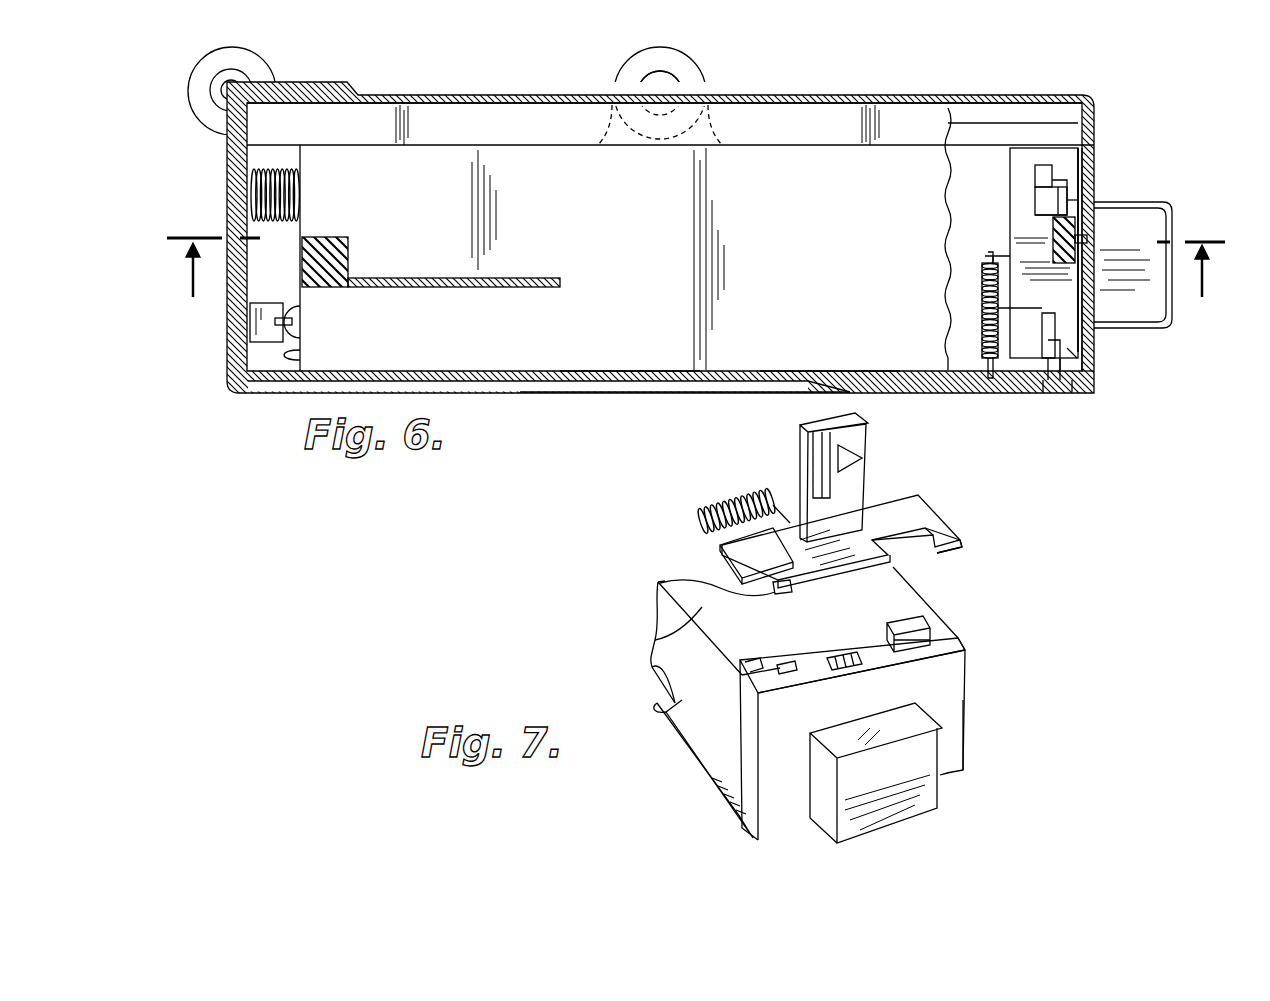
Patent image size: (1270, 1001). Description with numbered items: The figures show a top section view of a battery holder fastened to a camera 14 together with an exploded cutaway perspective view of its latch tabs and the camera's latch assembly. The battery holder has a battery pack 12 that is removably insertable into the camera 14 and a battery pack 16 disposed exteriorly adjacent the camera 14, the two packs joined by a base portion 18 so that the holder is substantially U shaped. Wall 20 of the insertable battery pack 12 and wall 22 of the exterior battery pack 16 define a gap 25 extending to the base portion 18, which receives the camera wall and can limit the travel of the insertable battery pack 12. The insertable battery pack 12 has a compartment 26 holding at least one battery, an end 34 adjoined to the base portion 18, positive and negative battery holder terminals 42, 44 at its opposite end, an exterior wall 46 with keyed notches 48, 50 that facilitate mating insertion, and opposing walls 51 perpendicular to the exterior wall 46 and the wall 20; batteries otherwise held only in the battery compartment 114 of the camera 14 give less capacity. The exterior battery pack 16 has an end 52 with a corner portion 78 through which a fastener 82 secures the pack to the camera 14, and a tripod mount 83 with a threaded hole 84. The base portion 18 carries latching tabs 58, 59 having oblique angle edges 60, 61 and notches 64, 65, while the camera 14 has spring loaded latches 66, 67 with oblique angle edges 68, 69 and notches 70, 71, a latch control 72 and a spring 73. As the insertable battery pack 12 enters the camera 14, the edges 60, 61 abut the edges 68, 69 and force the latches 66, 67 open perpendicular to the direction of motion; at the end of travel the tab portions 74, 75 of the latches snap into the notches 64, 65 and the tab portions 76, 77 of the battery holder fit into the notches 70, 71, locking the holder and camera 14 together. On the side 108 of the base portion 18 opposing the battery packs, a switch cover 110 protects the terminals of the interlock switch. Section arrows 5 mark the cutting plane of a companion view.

In FIG. 6, the removably insertable battery pack 12 is at (818, 380).
In FIG. 7, the removably insertable battery pack 12 is at (650, 666).
In FIG. 6, the camera 14 is at (798, 94).
In FIG. 6, the exteriorly disposed battery pack 16 is at (730, 392).
In FIG. 7, the exteriorly disposed battery pack 16 is at (715, 797).
In FIG. 6, the base portion 18 is at (1073, 395).
In FIG. 6, the wall of removably insertable battery pack 20 is at (640, 371).
In FIG. 7, the wall of removably insertable battery pack 20 is at (680, 750).
In FIG. 6, the wall of exteriorly disposed battery pack 22 is at (608, 392).
In FIG. 7, the wall of exteriorly disposed battery pack 22 is at (700, 775).
In FIG. 7, the gap 25 is at (655, 725).
In FIG. 6, the compartment 26 is at (282, 158).
In FIG. 6, the end of removably insertable battery pack 34 is at (1044, 393).
In FIG. 6, the positive battery holder terminal 42 is at (292, 322).
In FIG. 6, the negative battery holder terminal 44 is at (302, 186).
In FIG. 6, the exterior wall 46 is at (658, 262).
In FIG. 7, the exterior wall 46 is at (702, 607).
In FIG. 6, the keyed notch 48 is at (385, 279).
In FIG. 6, the keyed notch 50 is at (330, 240).
In FIG. 6, the opposing walls 51 is at (770, 145).
In FIG. 6, the end of exteriorly disposed battery pack 52 is at (300, 355).
In FIG. 6, the latching tab 58 is at (1096, 384).
In FIG. 7, the latching tab 58 is at (812, 690).
In FIG. 6, the latching tab 59 is at (1072, 168).
In FIG. 7, the latching tab 59 is at (873, 676).
In FIG. 6, the oblique angle edge 60 is at (1040, 337).
In FIG. 7, the oblique angle edge 60 is at (748, 650).
In FIG. 6, the oblique angle edge 61 is at (1043, 165).
In FIG. 7, the oblique angle edge 61 is at (905, 625).
In FIG. 6, the notch 64 is at (1062, 383).
In FIG. 7, the notch 64 is at (745, 678).
In FIG. 7, the notch 65 is at (968, 655).
In FIG. 7, the spring loaded latch 66 is at (657, 583).
In FIG. 6, the spring loaded latch 67 is at (1048, 196).
In FIG. 7, the spring loaded latch 67 is at (966, 545).
In FIG. 6, the oblique angle edge 68 is at (1078, 355).
In FIG. 7, the oblique angle edge 68 is at (787, 666).
In FIG. 6, the oblique angle edge 69 is at (1060, 202).
In FIG. 7, the oblique angle edge 69 is at (955, 553).
In FIG. 6, the notch 70 is at (1040, 305).
In FIG. 7, the notch 70 is at (722, 562).
In FIG. 6, the notch 71 is at (1030, 199).
In FIG. 7, the notch 71 is at (930, 535).
In FIG. 6, the latch control 72 is at (1050, 229).
In FIG. 7, the latch control 72 is at (866, 462).
In FIG. 6, the spring 73 is at (982, 277).
In FIG. 7, the spring 73 is at (745, 505).
In FIG. 6, the tab portion 74 is at (1068, 322).
In FIG. 7, the tab portion 74 is at (860, 575).
In FIG. 6, the tab portion 75 is at (1058, 175).
In FIG. 7, the tab portion 75 is at (940, 530).
In FIG. 7, the tab portion 76 is at (798, 664).
In FIG. 7, the tab portion 77 is at (926, 620).
In FIG. 6, the corner portion 78 is at (205, 76).
In FIG. 6, the fastener 82 is at (265, 62).
In FIG. 6, the tripod mount 83 is at (690, 62).
In FIG. 6, the threaded hole 84 is at (655, 84).
In FIG. 6, the side of base portion 108 is at (1094, 345).
In FIG. 7, the side of base portion 108 is at (955, 706).
In FIG. 6, the switch cover 110 is at (1160, 204).
In FIG. 7, the switch cover 110 is at (925, 762).
In FIG. 6, the battery compartment 114 is at (1013, 118).
In FIG. 6, the section line 5 is at (696, 283).